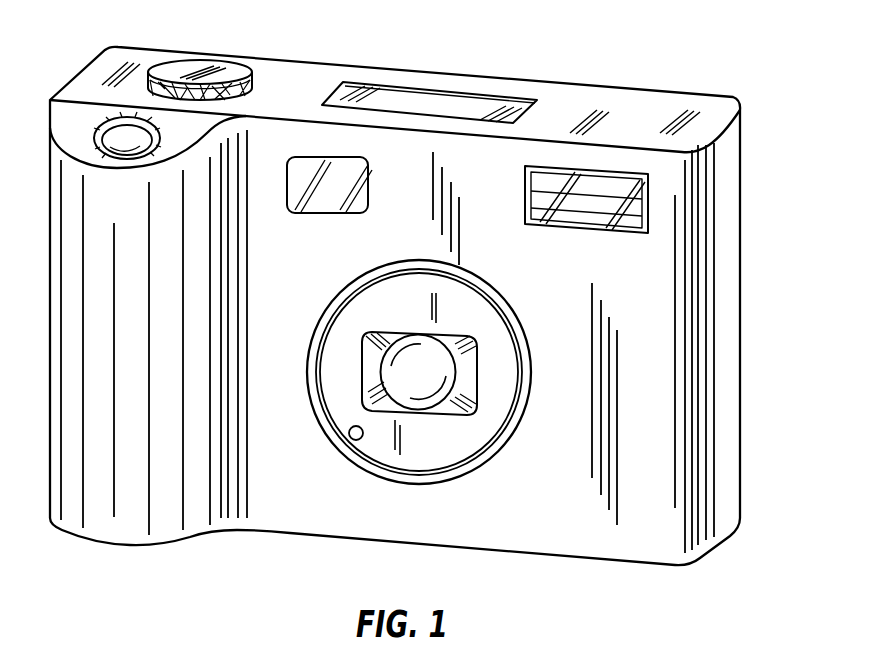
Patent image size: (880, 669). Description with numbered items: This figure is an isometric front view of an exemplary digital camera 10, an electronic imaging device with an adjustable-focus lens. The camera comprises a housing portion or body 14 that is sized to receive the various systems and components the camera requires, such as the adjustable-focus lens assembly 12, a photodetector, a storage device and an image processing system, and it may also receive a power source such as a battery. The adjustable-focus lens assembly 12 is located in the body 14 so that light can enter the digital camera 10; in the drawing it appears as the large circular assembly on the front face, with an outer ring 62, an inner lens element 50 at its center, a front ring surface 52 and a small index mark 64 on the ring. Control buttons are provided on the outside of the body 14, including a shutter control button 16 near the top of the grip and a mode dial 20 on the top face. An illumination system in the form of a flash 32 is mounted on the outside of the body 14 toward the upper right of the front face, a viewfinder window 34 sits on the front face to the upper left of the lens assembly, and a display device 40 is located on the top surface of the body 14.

The digital camera 10 is at (598, 50).
The adjustable-focus lens assembly 12 is at (480, 492).
The body 14 is at (741, 303).
The shutter control button 16 is at (96, 130).
The mode dial 20 is at (203, 58).
The flash 32 is at (577, 236).
The viewfinder window 34 is at (316, 214).
The display device 40 is at (428, 88).
The lens 50 is at (368, 322).
The lens ring front surface 52 is at (546, 364).
The outer ring 62 is at (373, 465).
The index mark 64 is at (345, 440).